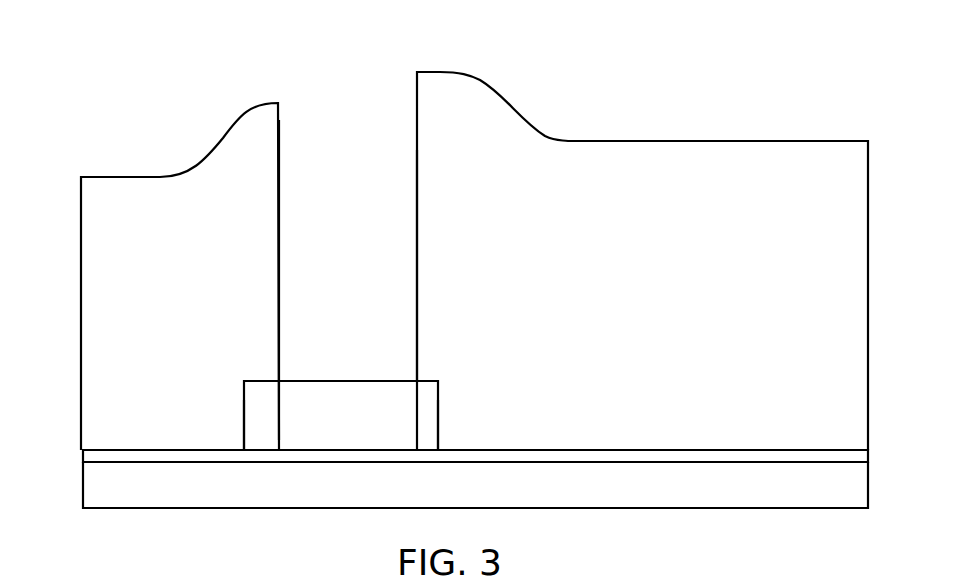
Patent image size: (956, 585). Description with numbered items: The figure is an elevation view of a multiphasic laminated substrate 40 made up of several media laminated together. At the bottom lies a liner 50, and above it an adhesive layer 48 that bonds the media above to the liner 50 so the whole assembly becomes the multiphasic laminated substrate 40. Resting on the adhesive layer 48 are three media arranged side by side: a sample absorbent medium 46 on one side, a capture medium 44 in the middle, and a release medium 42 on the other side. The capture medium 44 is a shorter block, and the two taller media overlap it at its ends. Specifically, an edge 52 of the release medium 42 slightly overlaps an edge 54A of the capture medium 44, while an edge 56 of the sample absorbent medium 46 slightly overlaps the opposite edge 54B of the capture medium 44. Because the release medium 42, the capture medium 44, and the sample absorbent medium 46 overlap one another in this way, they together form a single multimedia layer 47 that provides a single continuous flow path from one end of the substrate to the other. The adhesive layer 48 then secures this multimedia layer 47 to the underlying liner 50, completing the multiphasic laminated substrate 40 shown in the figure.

The multiphasic laminated substrate 40 is at (171, 72).
The release medium 42 is at (540, 128).
The capture medium 44 is at (326, 380).
The sample absorbent medium 46 is at (167, 172).
The multimedia layer 47 is at (348, 70).
The adhesive layer 48 is at (82, 450).
The liner 50 is at (82, 490).
The edge of the release medium 52 is at (417, 270).
The edge of the capture medium 54A is at (440, 430).
The opposite edge of the capture medium 54B is at (244, 431).
The edge of the sample absorbent medium 56 is at (281, 190).